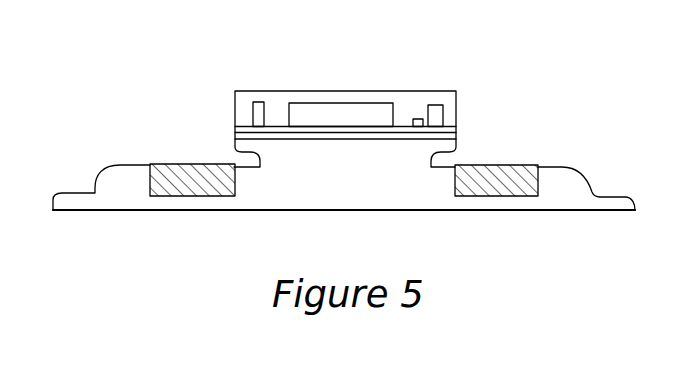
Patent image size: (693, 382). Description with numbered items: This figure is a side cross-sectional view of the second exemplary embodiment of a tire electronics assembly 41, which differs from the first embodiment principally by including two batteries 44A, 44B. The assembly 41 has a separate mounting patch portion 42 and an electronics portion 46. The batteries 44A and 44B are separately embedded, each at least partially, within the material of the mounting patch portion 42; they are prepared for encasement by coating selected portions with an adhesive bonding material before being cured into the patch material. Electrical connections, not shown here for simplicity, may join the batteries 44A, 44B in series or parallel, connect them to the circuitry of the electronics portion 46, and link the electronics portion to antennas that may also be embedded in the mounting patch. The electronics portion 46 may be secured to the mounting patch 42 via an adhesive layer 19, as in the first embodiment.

The adhesive layer 19 is at (235, 128).
The tire electronics assembly 41 is at (525, 113).
The mounting patch portion 42 is at (602, 197).
The battery 44A is at (168, 190).
The battery 44B is at (502, 187).
The electronics portion 46 is at (409, 91).